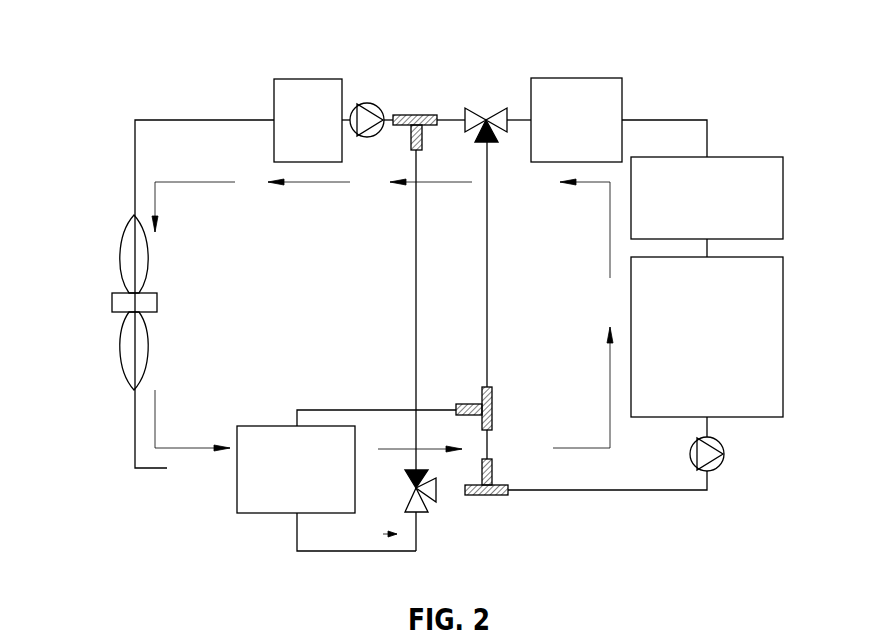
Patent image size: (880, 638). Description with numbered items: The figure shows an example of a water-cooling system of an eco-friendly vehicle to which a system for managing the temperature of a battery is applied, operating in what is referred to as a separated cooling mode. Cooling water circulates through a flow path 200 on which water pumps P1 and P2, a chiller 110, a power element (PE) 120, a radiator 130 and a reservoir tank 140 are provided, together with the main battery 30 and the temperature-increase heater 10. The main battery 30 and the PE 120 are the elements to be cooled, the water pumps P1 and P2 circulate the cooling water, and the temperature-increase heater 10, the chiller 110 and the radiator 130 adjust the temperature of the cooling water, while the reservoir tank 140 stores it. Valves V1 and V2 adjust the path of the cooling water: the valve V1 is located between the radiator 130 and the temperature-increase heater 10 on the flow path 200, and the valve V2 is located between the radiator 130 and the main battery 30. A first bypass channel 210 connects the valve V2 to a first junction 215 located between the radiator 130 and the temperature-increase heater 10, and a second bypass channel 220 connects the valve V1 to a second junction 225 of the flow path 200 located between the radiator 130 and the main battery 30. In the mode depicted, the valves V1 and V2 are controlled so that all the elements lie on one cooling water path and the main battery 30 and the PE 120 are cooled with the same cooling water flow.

The flow path 200 is at (158, 118).
The power element (PE) 120 is at (308, 79).
The water pump P2 is at (372, 103).
The first junction 215 is at (418, 112).
The valve V1 is at (477, 108).
The chiller 110 is at (575, 78).
The temperature-increase heater 10 is at (783, 199).
The main battery 30 is at (783, 338).
The water pump P1 is at (725, 455).
The first bypass channel 210 is at (416, 305).
The second bypass channel 220 is at (487, 285).
The second junction 225 is at (508, 497).
The valve V2 is at (423, 513).
The reservoir tank 140 is at (247, 514).
The radiator 130 is at (124, 358).